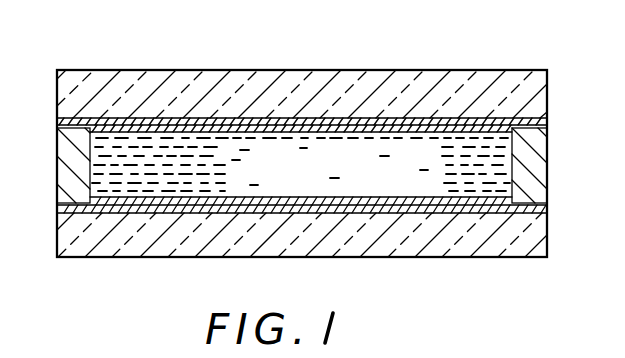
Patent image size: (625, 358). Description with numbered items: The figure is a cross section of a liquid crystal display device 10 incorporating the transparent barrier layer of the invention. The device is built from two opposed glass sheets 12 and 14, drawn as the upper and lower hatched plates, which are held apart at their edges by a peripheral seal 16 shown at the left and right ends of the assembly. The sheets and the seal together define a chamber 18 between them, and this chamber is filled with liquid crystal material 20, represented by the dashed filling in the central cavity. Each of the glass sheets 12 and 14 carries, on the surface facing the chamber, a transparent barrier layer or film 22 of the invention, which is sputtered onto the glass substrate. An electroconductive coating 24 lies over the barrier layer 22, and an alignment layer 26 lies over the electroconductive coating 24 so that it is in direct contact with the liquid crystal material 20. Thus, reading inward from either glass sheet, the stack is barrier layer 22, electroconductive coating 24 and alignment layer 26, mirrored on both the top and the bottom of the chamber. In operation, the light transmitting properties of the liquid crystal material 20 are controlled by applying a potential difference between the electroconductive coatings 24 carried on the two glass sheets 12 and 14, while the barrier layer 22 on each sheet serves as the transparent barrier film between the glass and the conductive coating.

The LCD device 10 is at (527, 59).
The glass sheet 12 is at (143, 82).
The glass sheet 14 is at (140, 238).
The peripheral seal 16 is at (67, 168).
The chamber 18 is at (288, 137).
The liquid crystal material 20 is at (285, 185).
The transparent barrier layer 22 is at (377, 127).
The electroconductive coating 24 is at (213, 131).
The alignment layer 26 is at (455, 118).